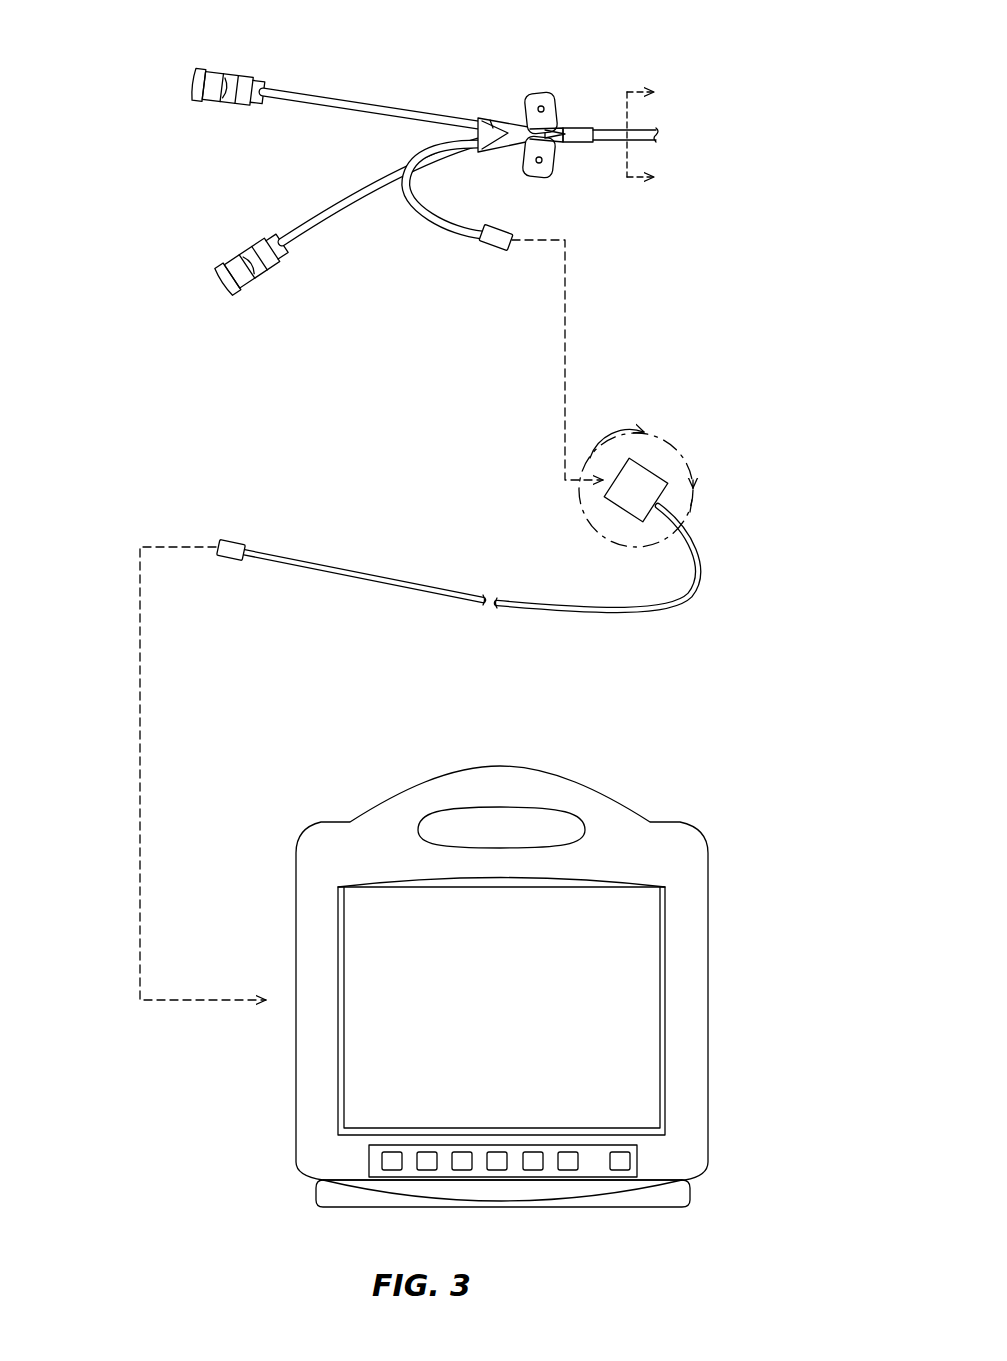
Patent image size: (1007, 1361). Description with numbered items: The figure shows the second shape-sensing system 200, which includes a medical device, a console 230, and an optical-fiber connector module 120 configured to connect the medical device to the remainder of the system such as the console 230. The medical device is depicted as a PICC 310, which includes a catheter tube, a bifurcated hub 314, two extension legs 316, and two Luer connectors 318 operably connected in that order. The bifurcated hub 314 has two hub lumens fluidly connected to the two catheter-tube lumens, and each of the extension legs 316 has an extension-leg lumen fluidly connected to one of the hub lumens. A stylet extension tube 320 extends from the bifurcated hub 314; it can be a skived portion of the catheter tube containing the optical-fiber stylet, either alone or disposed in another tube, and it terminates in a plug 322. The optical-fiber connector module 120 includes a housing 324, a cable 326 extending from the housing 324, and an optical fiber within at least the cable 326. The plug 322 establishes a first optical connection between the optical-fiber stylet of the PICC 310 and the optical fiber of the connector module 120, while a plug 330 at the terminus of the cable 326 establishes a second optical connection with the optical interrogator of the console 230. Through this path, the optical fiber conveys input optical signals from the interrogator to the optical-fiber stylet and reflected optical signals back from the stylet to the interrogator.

The shape-sensing system 200 is at (818, 197).
The PICC 310 is at (170, 148).
The bifurcated hub 314 is at (483, 118).
The extension legs 316 is at (368, 92).
The Luer connectors 318 is at (232, 72).
The stylet extension tube 320 is at (447, 232).
The plug 322 is at (492, 248).
The housing 324 is at (623, 505).
The cable 326 is at (596, 620).
The plug 330 is at (232, 540).
The optical-fiber connector module 120 is at (716, 599).
The console 230 is at (725, 890).